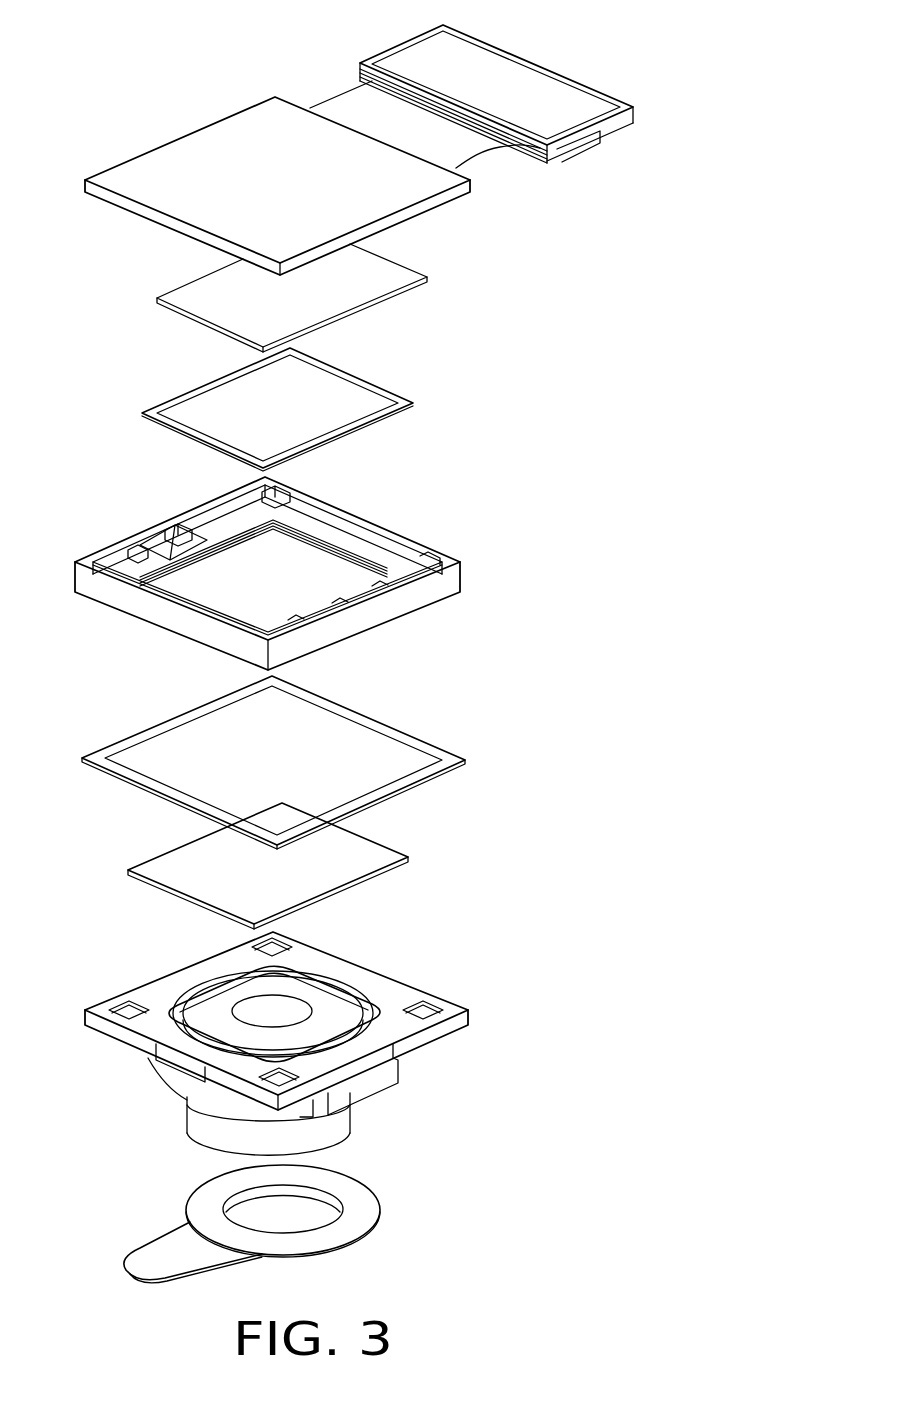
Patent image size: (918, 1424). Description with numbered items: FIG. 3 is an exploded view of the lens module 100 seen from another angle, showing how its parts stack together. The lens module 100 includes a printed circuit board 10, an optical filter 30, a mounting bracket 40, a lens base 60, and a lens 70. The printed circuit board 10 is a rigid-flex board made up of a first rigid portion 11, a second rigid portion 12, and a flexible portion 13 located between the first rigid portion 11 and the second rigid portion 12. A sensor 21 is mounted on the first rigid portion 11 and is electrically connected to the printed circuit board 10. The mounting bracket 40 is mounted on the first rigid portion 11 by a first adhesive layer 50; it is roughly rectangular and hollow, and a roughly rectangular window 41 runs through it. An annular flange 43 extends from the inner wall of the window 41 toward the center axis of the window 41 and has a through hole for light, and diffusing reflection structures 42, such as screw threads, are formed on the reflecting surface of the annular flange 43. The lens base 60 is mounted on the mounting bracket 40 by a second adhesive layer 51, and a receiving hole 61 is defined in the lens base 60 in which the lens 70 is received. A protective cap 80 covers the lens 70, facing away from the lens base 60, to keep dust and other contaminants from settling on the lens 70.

The lens module 100 is at (178, 42).
The printed circuit board 10 is at (359, 158).
The first rigid portion 11 is at (397, 218).
The second rigid portion 12 is at (496, 120).
The flexible portion 13 is at (457, 137).
The sensor 21 is at (343, 290).
The first adhesive layer 50 is at (398, 403).
The mounting bracket 40 is at (280, 568).
The window 41 is at (324, 566).
The diffusing reflection structures 42 is at (142, 545).
The annular flange 43 is at (232, 525).
The second adhesive layer 51 is at (127, 742).
The optical filter 30 is at (207, 870).
The lens base 60 is at (283, 1021).
The receiving hole 61 is at (210, 1021).
The lens 70 is at (152, 1103).
The protective cap 80 is at (212, 1212).